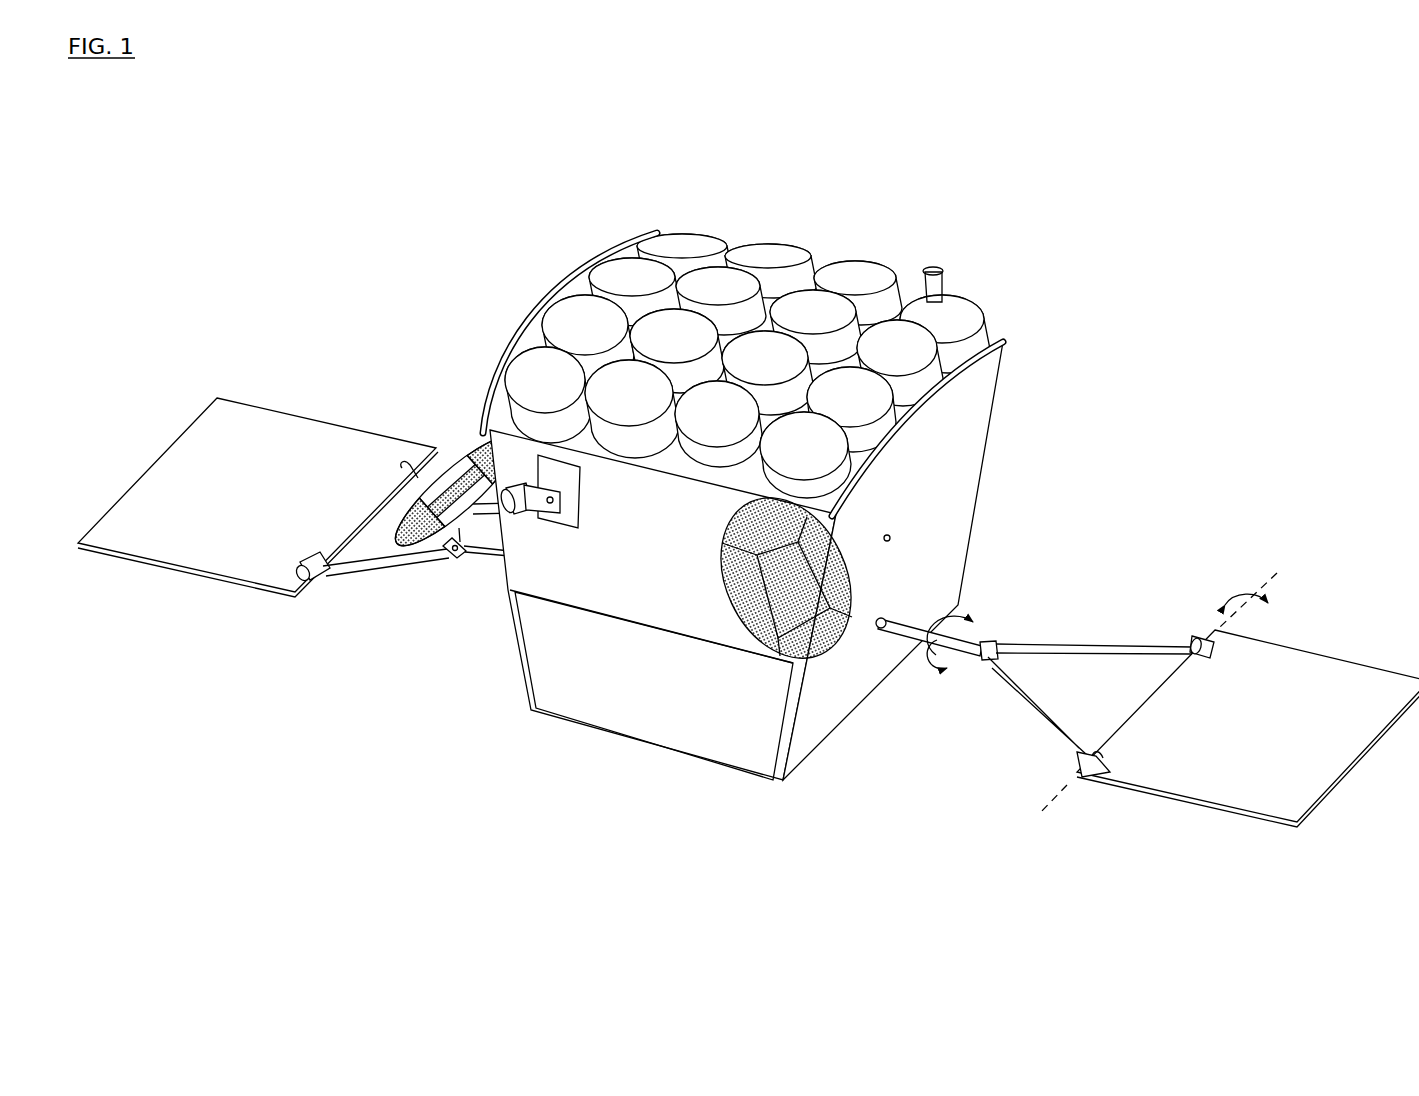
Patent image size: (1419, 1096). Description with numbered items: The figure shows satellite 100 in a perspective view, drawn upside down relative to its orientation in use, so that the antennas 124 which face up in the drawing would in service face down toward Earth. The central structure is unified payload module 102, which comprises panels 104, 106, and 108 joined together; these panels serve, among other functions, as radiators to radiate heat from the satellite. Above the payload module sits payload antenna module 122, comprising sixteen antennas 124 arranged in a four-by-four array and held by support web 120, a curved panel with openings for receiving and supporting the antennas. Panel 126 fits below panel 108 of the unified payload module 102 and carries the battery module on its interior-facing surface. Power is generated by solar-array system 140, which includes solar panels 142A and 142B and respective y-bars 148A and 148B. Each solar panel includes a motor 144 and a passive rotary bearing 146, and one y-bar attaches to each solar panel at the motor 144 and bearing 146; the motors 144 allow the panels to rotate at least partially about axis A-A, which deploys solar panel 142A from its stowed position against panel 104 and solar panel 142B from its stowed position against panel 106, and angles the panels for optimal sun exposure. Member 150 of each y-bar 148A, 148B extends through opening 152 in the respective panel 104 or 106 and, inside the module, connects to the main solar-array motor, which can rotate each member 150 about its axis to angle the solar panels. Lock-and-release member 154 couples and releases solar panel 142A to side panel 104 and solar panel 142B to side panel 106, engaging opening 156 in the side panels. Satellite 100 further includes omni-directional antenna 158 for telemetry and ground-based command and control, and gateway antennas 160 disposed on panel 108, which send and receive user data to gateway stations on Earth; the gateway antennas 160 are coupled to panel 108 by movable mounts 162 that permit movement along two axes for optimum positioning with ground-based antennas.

The satellite 100 is at (1120, 245).
The unified payload module 102 is at (781, 503).
The panel 104 is at (932, 456).
The panel 106 is at (513, 330).
The panel 108 is at (624, 558).
The support web 120 is at (672, 462).
The payload antenna module 122 is at (747, 324).
The antennas 124 is at (762, 250).
The panel 126 is at (624, 689).
The solar-array system 140 is at (330, 658).
The solar panel 142A is at (1224, 771).
The solar panel 142B is at (258, 490).
The motor 144 is at (1200, 640).
The passive rotary bearing 146 is at (1100, 765).
The y-bar 148A is at (1084, 696).
The y-bar 148B is at (457, 582).
The member 150 is at (898, 642).
The opening 152 is at (883, 617).
The lock-and-release member 154 is at (266, 478).
The opening 156 is at (892, 530).
The omni-directional antenna 158 is at (950, 267).
The gateway antenna 160 is at (720, 573).
The movable mount 162 is at (532, 514).